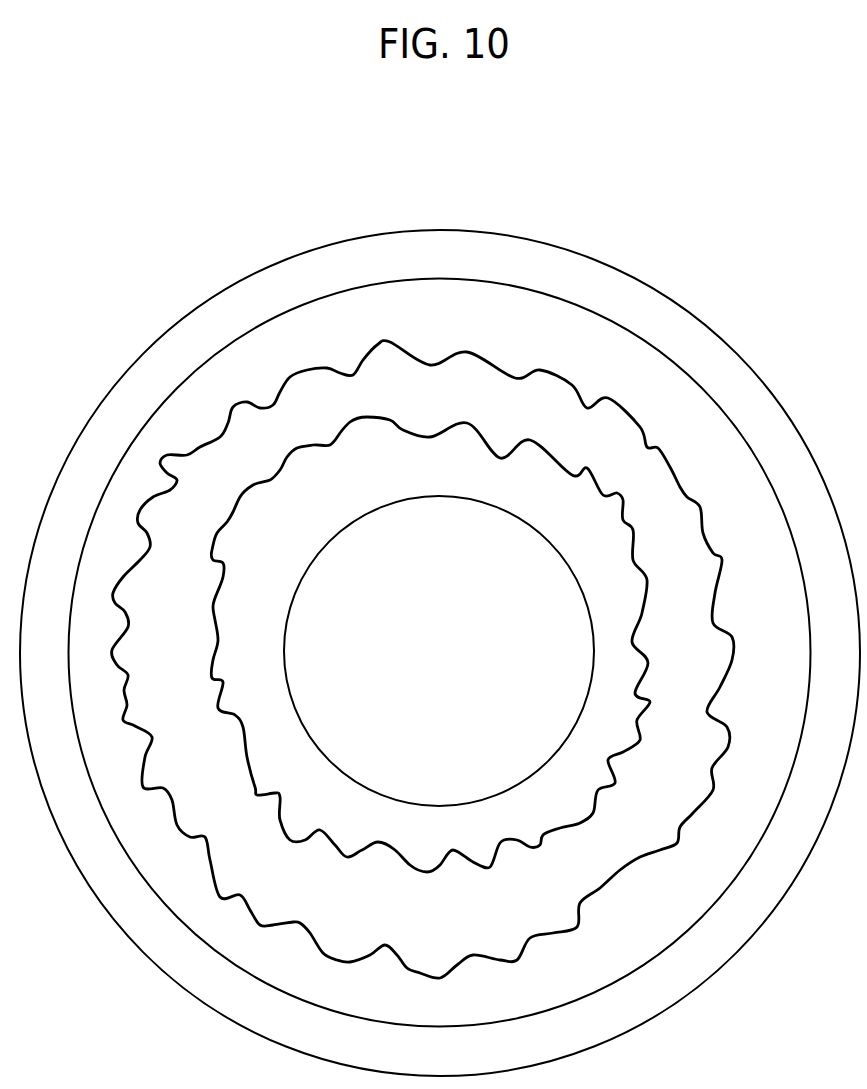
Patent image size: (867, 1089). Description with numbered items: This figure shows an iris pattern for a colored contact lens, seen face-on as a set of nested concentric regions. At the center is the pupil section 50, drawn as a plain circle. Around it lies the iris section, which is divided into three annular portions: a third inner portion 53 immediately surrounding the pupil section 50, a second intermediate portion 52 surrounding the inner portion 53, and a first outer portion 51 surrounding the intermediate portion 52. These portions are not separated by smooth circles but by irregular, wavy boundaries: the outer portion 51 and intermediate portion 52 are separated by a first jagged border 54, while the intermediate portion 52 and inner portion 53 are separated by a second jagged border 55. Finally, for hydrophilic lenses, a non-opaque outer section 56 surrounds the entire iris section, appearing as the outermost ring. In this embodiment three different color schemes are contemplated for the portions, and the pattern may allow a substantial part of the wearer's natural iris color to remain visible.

The pupil section 50 is at (458, 668).
The first outer portion 51 is at (148, 495).
The second intermediate portion 52 is at (224, 500).
The third inner portion 53 is at (302, 540).
The first jagged border 54 is at (572, 385).
The second jagged border 55 is at (517, 613).
The non-opaque outer section 56 is at (120, 448).